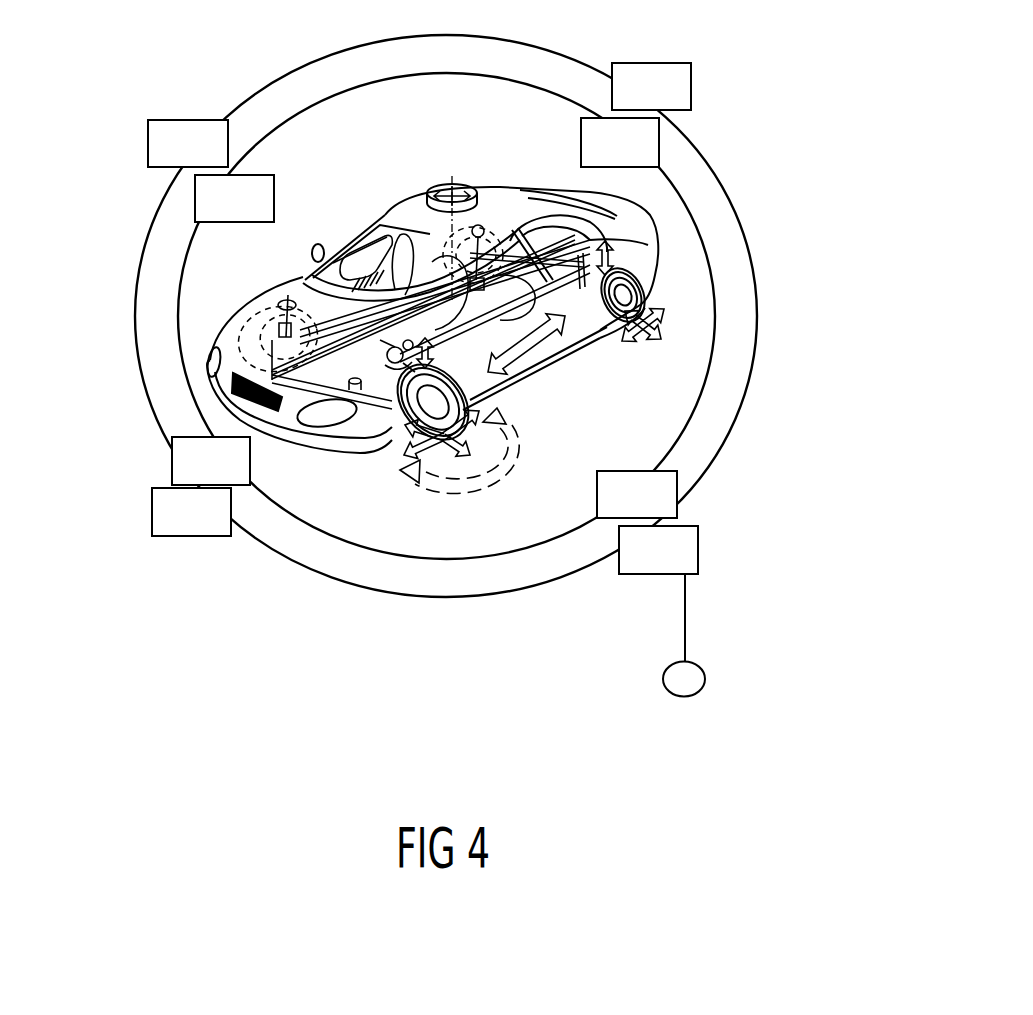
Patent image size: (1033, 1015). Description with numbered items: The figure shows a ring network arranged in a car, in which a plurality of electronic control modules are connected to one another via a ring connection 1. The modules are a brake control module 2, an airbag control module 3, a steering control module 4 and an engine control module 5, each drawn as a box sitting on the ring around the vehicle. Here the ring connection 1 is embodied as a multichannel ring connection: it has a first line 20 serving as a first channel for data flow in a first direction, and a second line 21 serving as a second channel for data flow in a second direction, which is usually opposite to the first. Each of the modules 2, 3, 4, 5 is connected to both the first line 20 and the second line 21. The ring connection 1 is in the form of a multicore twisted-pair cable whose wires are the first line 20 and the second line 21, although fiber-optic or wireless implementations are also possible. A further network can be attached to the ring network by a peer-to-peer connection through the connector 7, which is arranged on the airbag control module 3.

The ring connection 1 is at (730, 253).
The brake control module 2 is at (692, 63).
The airbag control module 3 is at (675, 472).
The steering control module 4 is at (172, 438).
The engine control module 5 is at (148, 121).
The connector 7 is at (706, 678).
The first line 20 is at (711, 362).
The second line 21 is at (757, 300).